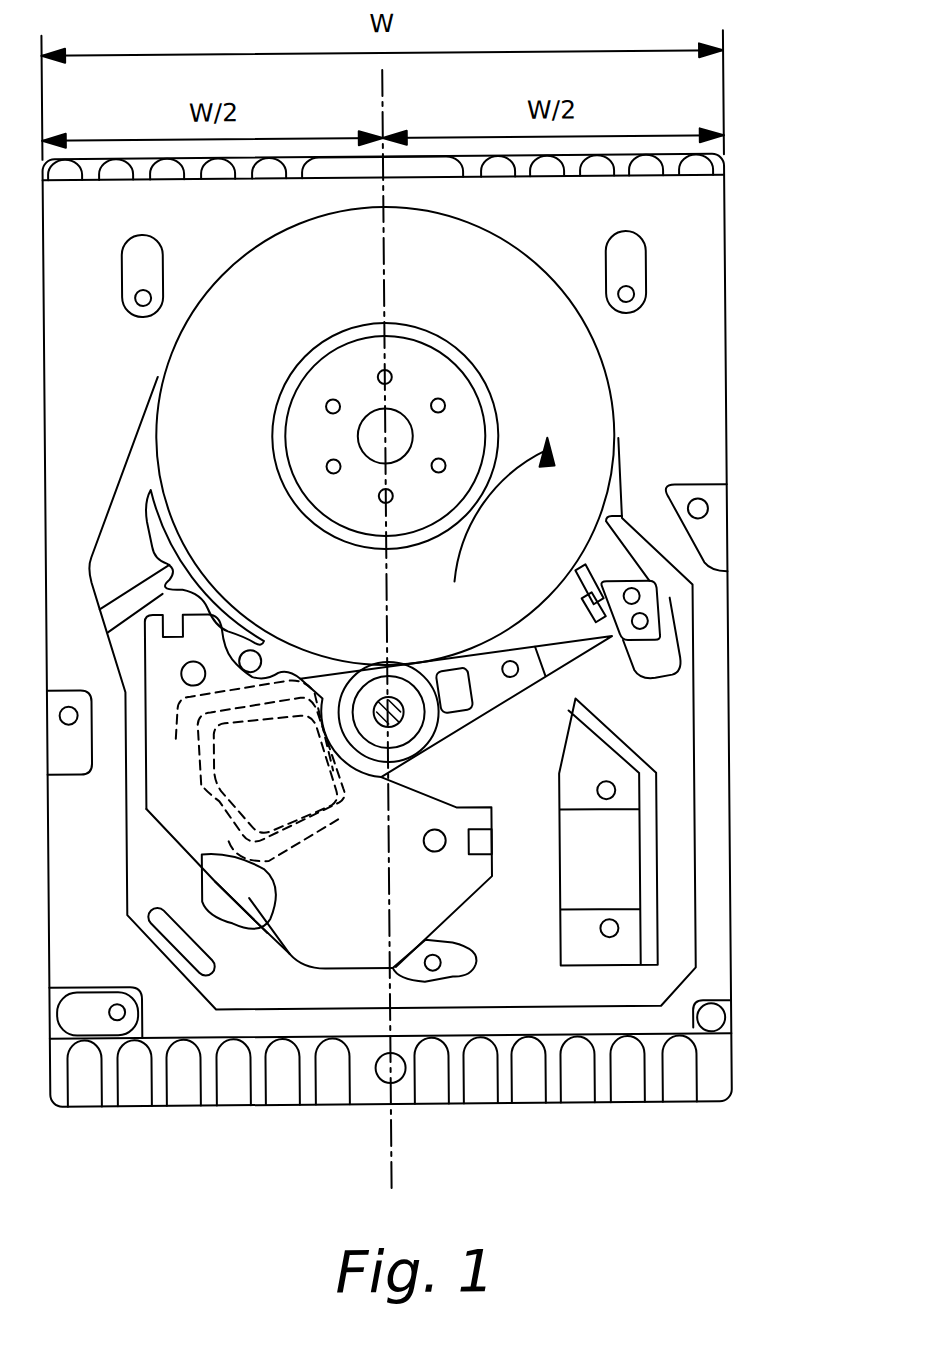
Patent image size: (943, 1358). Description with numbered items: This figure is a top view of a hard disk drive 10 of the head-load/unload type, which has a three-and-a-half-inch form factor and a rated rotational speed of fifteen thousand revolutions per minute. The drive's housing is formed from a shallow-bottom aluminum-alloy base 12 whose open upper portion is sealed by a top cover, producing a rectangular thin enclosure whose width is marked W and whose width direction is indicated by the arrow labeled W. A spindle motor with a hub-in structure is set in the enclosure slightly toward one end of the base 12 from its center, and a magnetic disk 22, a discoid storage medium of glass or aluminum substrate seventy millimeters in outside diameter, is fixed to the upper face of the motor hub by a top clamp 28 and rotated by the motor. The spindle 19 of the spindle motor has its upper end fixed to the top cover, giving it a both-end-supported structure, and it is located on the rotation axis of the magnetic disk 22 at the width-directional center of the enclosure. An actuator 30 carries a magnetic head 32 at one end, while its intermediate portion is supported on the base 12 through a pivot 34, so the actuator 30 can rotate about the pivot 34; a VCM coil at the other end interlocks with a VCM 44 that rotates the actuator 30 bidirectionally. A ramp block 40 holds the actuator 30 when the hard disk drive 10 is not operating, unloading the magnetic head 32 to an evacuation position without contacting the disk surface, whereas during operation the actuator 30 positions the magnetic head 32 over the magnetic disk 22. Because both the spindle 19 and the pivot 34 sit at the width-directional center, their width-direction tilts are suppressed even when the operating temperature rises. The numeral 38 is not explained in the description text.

The hard disk drive 10 is at (772, 196).
The base 12 is at (728, 614).
The spindle 19 is at (372, 440).
The magnetic disk 22 is at (203, 378).
The top clamp 28 is at (470, 420).
The actuator 30 is at (448, 724).
The magnetic head 32 is at (612, 640).
The pivot 34 is at (397, 716).
The flex circuit 38 is at (200, 783).
The ramp block 40 is at (668, 627).
The VCM 44 is at (200, 853).